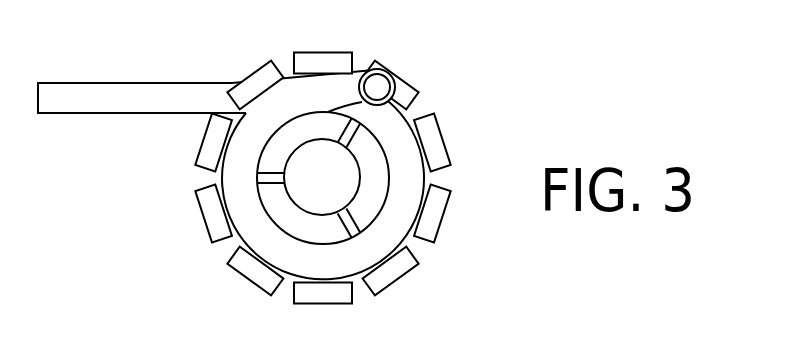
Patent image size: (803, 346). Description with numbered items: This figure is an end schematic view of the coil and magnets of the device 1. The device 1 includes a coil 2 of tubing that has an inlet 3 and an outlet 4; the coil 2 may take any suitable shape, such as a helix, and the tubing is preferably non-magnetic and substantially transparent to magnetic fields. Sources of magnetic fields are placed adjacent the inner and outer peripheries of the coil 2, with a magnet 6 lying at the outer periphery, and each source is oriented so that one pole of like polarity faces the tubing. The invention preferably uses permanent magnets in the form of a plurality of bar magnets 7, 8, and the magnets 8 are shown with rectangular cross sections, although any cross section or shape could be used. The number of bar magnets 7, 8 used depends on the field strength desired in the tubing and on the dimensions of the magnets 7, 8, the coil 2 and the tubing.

The device 1 is at (500, 117).
The coil 2 is at (237, 167).
The inlet 3 is at (80, 83).
The outlet 4 is at (380, 66).
The magnet 6 is at (252, 227).
The bar magnets 7 is at (404, 268).
The bar magnets 8 is at (300, 228).